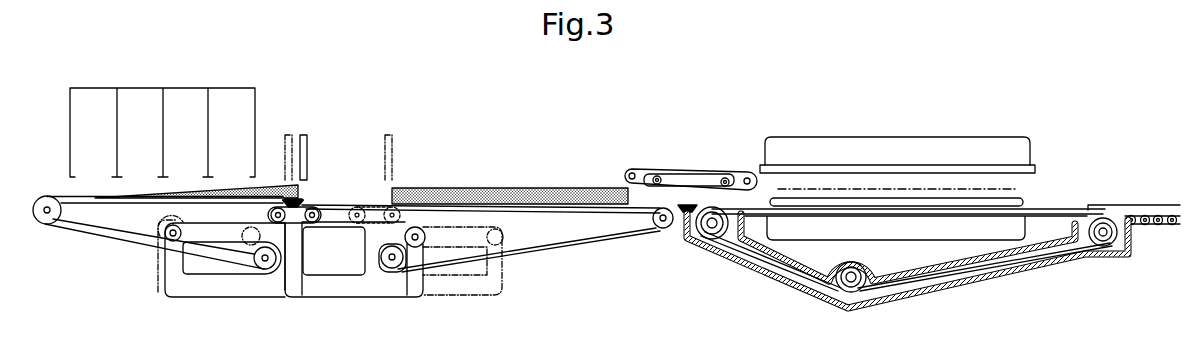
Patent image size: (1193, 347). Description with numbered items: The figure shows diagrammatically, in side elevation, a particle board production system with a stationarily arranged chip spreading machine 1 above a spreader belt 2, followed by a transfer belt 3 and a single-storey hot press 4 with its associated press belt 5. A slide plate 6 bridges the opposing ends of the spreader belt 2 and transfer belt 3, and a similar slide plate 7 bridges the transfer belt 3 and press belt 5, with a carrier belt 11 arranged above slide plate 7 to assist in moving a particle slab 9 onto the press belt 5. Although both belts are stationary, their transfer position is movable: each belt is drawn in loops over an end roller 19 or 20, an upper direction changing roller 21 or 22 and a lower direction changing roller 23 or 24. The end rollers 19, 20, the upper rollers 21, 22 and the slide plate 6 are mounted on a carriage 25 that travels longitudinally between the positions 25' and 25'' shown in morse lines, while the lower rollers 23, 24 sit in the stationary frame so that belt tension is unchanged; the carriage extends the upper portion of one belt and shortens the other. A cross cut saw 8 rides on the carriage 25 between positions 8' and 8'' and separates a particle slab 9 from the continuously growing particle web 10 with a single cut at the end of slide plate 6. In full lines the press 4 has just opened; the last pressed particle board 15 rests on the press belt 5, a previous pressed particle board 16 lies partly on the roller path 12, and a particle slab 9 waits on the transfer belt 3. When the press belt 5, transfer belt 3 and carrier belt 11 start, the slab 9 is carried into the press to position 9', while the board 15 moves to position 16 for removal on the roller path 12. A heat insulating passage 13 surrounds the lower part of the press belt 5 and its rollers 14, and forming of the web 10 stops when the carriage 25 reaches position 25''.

The chip spreading machine 1 is at (152, 88).
The spreader belt 2 is at (86, 236).
The transfer belt 3 is at (583, 246).
The hot press 4 is at (978, 153).
The press belt 5 is at (1072, 210).
The slide plate 6 is at (297, 200).
The slide plate 7 is at (668, 230).
The cross cut saw 8 is at (318, 138).
The saw position 8' is at (277, 134).
The saw position 8'' is at (405, 140).
The particle slab 9 is at (510, 178).
The slab position 9' is at (896, 144).
The particle web 10 is at (243, 187).
The carrier belt 11 is at (702, 170).
The roller path 12 is at (1158, 227).
The heat insulating passage 13 is at (932, 286).
The rollers 14 is at (716, 233).
The pressed particle board 15 is at (884, 200).
The pressed particle board 16 is at (1155, 214).
The end roller 19 is at (278, 224).
The end roller 20 is at (327, 223).
The upper direction changing roller 21 is at (160, 233).
The upper direction changing roller 22 is at (418, 228).
The lower direction changing roller 23 is at (266, 270).
The lower direction changing roller 24 is at (390, 268).
The carriage 25 is at (354, 278).
The carriage position 25' is at (188, 258).
The carriage position 25'' is at (492, 267).